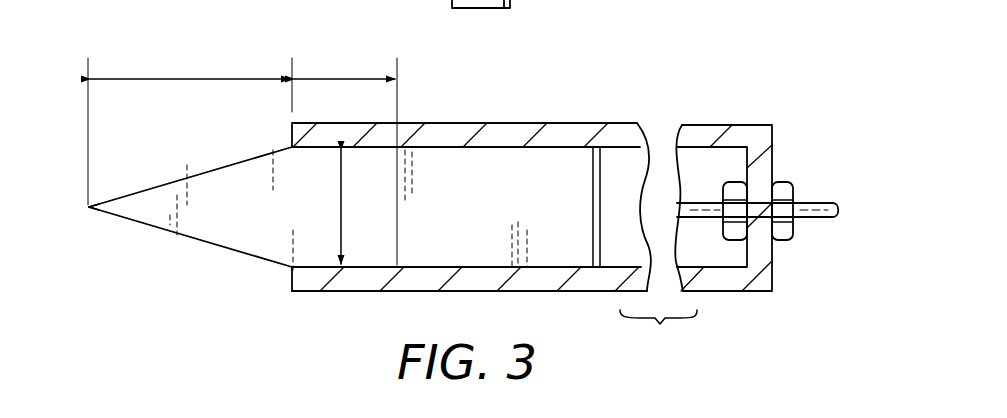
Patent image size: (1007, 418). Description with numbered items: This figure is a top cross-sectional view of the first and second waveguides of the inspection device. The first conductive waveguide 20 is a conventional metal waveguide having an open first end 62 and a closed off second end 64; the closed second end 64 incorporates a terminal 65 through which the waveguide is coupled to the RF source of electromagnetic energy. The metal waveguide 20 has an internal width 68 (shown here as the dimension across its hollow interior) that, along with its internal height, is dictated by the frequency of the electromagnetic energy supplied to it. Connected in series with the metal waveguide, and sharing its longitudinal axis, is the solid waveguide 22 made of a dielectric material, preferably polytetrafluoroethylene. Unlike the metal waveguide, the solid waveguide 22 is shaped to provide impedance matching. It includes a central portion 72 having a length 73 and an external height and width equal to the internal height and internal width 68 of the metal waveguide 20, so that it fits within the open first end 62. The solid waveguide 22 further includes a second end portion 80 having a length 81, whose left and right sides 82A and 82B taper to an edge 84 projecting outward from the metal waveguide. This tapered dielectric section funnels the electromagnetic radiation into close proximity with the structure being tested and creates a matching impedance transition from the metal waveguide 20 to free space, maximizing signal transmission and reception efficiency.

The first conductive waveguide 20 is at (525, 123).
The solid waveguide 22 is at (154, 210).
The open first end 62 is at (290, 277).
The closed off second end 64 is at (775, 158).
The terminal 65 is at (795, 220).
The internal width 68 is at (342, 205).
The central portion 72 is at (372, 239).
The length 73 is at (340, 79).
The second end portion 80 is at (125, 220).
The length 81 is at (178, 79).
The left side 82A is at (203, 172).
The right side 82B is at (202, 241).
The edge 84 is at (87, 207).